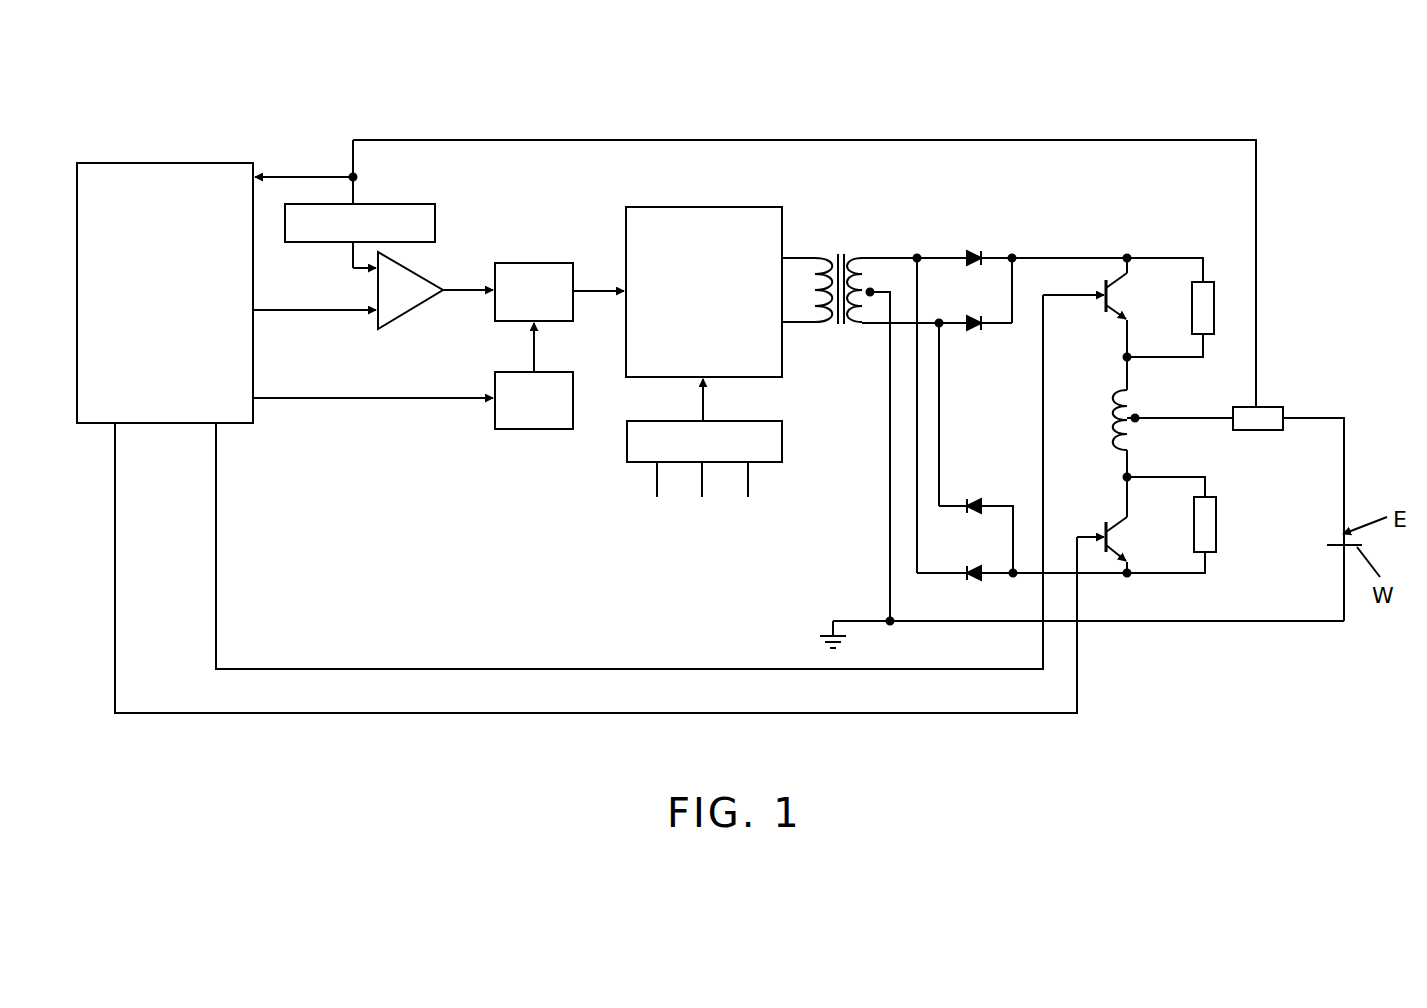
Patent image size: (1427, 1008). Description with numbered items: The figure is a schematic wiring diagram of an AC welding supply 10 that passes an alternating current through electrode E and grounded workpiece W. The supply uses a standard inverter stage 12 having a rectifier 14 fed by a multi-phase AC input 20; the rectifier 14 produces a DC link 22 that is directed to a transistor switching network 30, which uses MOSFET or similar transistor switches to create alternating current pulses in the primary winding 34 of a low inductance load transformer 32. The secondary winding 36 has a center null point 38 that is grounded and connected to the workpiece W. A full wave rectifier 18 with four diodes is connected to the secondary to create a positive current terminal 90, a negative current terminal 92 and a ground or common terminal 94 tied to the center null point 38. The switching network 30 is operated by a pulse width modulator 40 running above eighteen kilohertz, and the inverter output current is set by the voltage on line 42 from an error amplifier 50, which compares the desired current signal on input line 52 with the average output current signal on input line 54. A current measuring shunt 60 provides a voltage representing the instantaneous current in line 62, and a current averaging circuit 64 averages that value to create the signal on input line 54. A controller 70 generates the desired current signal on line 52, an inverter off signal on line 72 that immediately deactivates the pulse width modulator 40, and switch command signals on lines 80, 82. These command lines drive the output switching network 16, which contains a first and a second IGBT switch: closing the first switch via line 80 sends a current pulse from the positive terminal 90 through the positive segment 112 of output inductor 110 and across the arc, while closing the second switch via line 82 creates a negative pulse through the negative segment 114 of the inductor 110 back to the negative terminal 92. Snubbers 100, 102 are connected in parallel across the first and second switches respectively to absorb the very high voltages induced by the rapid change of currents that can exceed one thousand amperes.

The AC welding supply 10 is at (1052, 108).
The inverter stage 12 is at (848, 259).
The rectifier 14 is at (787, 452).
The output switching network 16 is at (1087, 231).
The full wave rectifier 18 is at (944, 244).
The AC input 20 is at (650, 488).
The DC link 22 is at (701, 404).
The transistor switching network 30 is at (715, 207).
The load transformer 32 is at (846, 240).
The primary winding 34 is at (825, 307).
The secondary winding 36 is at (865, 325).
The center null point 38 is at (873, 289).
The pulse width modulator 40 is at (540, 262).
The line 42 is at (458, 289).
The error amplifier 50 is at (410, 312).
The input line 52 is at (338, 312).
The input line 54 is at (350, 259).
The current measuring shunt 60 is at (1270, 407).
The line 62 is at (1256, 177).
The current averaging circuit 64 is at (400, 205).
The controller 70 is at (180, 161).
The line 72 is at (388, 397).
The line 80 is at (675, 668).
The line 82 is at (672, 713).
The positive current terminal 90 is at (1033, 256).
The negative current terminal 92 is at (1028, 576).
The ground or common terminal 94 is at (890, 510).
The snubber 100 is at (1215, 308).
The snubber 102 is at (1217, 517).
The output inductor 110 is at (1126, 417).
The positive segment 112 is at (1133, 400).
The negative segment 114 is at (1117, 442).